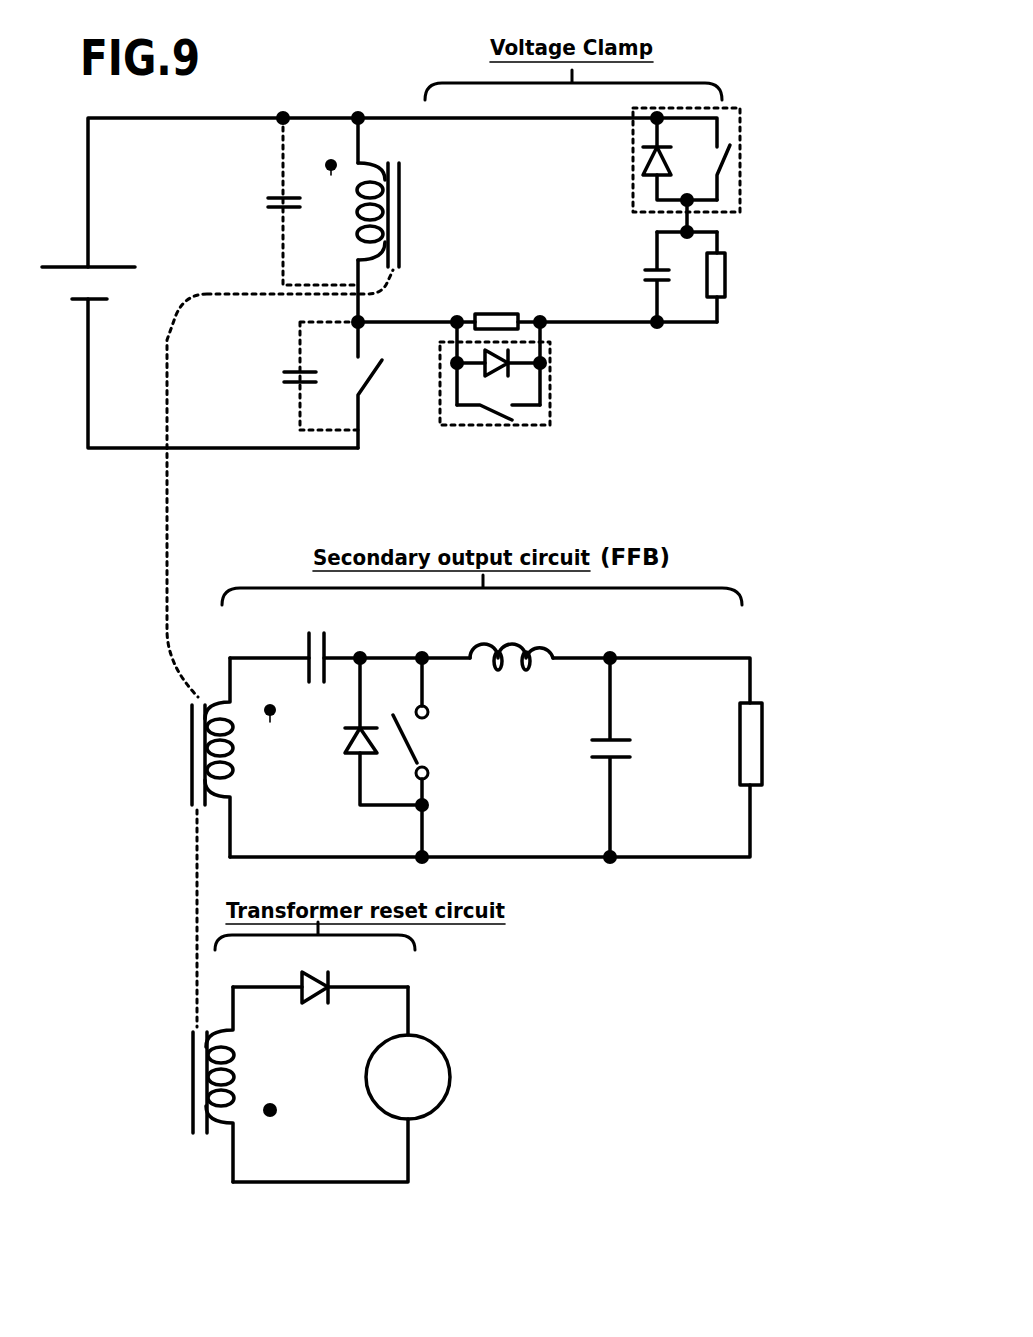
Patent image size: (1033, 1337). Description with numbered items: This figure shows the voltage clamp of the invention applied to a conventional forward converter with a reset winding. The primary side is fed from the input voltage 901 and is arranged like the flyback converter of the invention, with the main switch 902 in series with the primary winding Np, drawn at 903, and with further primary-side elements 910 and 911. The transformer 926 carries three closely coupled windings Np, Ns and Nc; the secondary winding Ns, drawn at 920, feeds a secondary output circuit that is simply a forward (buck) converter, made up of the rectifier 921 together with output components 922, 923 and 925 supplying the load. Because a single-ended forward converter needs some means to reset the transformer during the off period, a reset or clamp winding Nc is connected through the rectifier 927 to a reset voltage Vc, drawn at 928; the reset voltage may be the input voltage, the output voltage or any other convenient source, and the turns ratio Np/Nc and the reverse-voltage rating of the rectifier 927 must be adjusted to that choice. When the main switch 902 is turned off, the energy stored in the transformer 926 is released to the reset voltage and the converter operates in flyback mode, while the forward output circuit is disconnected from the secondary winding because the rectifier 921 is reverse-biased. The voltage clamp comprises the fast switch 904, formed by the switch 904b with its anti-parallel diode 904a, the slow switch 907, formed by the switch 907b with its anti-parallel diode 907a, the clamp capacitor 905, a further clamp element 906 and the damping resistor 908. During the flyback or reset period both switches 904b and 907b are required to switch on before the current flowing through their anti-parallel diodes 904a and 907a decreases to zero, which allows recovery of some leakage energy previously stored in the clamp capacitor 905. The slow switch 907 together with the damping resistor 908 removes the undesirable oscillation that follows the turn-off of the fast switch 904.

The input voltage 901 is at (82, 310).
The main switch 902 is at (373, 392).
The transformer (primary winding Np) 903 is at (340, 214).
The fast switch 904 is at (596, 405).
The anti-parallel diode 904a is at (520, 368).
The switch 904b is at (495, 420).
The clamp capacitor 905 is at (640, 268).
The clamp resistor 906 is at (757, 270).
The slow switch 907 is at (707, 131).
The anti-parallel diode 907a is at (645, 157).
The switch 907b is at (730, 168).
The damping resistor 908 is at (490, 312).
The capacitor across primary 910 is at (263, 194).
The capacitor across main switch 911 is at (283, 372).
The secondary winding Ns 920 is at (185, 763).
The rectifier 921 is at (352, 633).
The rectifier diode 922 is at (347, 757).
The synchronous switch 923 is at (418, 742).
The output inductor 925 is at (557, 637).
The transformer 926 is at (598, 762).
The rectifier 927 is at (760, 792).
The reset voltage source Vc 928 is at (432, 1034).